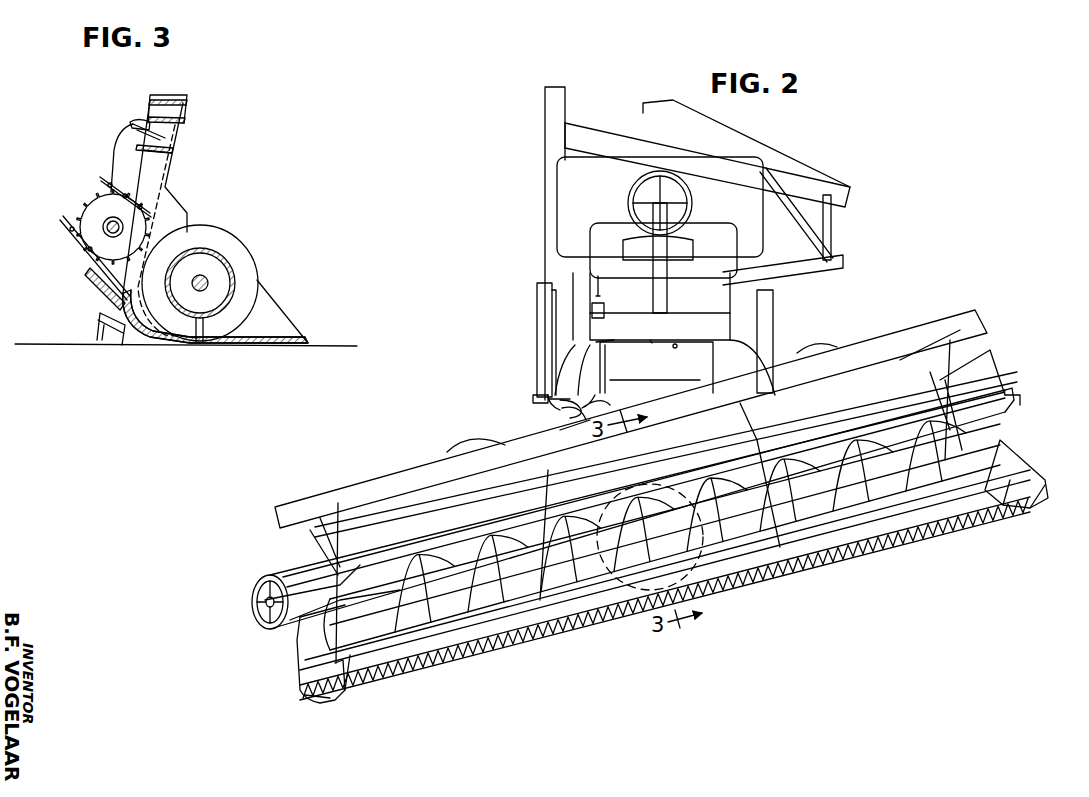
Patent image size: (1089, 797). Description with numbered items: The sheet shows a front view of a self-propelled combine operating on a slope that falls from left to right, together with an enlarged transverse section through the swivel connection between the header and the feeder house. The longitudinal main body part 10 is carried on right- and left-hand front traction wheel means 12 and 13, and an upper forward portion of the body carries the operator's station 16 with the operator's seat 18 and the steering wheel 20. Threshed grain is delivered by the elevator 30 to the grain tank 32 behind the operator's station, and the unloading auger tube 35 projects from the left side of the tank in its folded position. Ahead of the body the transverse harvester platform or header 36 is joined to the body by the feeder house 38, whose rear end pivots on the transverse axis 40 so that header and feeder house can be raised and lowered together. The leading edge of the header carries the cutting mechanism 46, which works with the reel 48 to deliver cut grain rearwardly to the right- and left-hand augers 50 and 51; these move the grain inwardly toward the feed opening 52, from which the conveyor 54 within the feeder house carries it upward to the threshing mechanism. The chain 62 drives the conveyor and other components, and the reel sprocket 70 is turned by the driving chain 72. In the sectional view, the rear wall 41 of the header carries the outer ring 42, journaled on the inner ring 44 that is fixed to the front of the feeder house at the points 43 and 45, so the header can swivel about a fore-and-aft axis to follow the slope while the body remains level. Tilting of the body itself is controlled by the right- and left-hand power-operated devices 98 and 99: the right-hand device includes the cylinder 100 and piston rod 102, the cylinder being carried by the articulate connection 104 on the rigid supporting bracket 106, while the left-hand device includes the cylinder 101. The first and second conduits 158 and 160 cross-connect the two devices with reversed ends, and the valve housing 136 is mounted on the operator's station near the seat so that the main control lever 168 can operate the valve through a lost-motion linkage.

In FIG. 2, the main body part 10 is at (707, 366).
In FIG. 2, the right-hand front wheel means 12 is at (447, 457).
In FIG. 2, the left-hand front wheel means 13 is at (840, 345).
In FIG. 2, the operator's station 16 is at (727, 317).
In FIG. 2, the operator's seat 18 is at (690, 253).
In FIG. 2, the steering wheel 20 is at (672, 179).
In FIG. 2, the elevator 30 is at (548, 112).
In FIG. 2, the grain tank 32 is at (565, 198).
In FIG. 2, the unloading auger tube 35 is at (838, 272).
In FIG. 3, the harvester platform or header 36 is at (283, 332).
In FIG. 2, the harvester platform or header 36 is at (303, 683).
In FIG. 3, the feeder house 38 is at (130, 122).
In FIG. 2, the feeder house 38 is at (643, 388).
In FIG. 2, the transverse pivot axis 40 is at (618, 366).
In FIG. 3, the rear wall of the header 41 is at (182, 128).
In FIG. 3, the outer ring 42 is at (185, 98).
In FIG. 3, the fixing point of inner ring 43 is at (137, 123).
In FIG. 3, the inner ring 44 is at (150, 118).
In FIG. 3, the fixing point of inner ring 45 is at (98, 290).
In FIG. 2, the cutting mechanism 46 is at (505, 647).
In FIG. 2, the reel 48 is at (363, 490).
In FIG. 2, the right-hand auger 50 is at (448, 597).
In FIG. 3, the left-hand auger 51 is at (247, 262).
In FIG. 2, the left-hand auger 51 is at (833, 495).
In FIG. 3, the feed opening 52 is at (163, 180).
In FIG. 2, the feed opening 52 is at (607, 597).
In FIG. 3, the conveyor 54 is at (103, 178).
In FIG. 2, the chain 62 is at (584, 421).
In FIG. 2, the reel sprocket 70 is at (282, 622).
In FIG. 2, the driving chain 72 is at (300, 567).
In FIG. 2, the right-hand power-operated device 98 is at (536, 307).
In FIG. 2, the left-hand power-operated device 99 is at (777, 322).
In FIG. 2, the cylinder 100 is at (540, 348).
In FIG. 2, the cylinder 101 is at (770, 353).
In FIG. 2, the piston rod 102 is at (546, 441).
In FIG. 2, the articulate connection 104 is at (532, 408).
In FIG. 2, the supporting bracket 106 is at (527, 422).
In FIG. 2, the valve housing 136 is at (618, 310).
In FIG. 2, the first conduit 158 is at (648, 342).
In FIG. 2, the second conduit 160 is at (675, 343).
In FIG. 2, the main control lever 168 is at (598, 276).